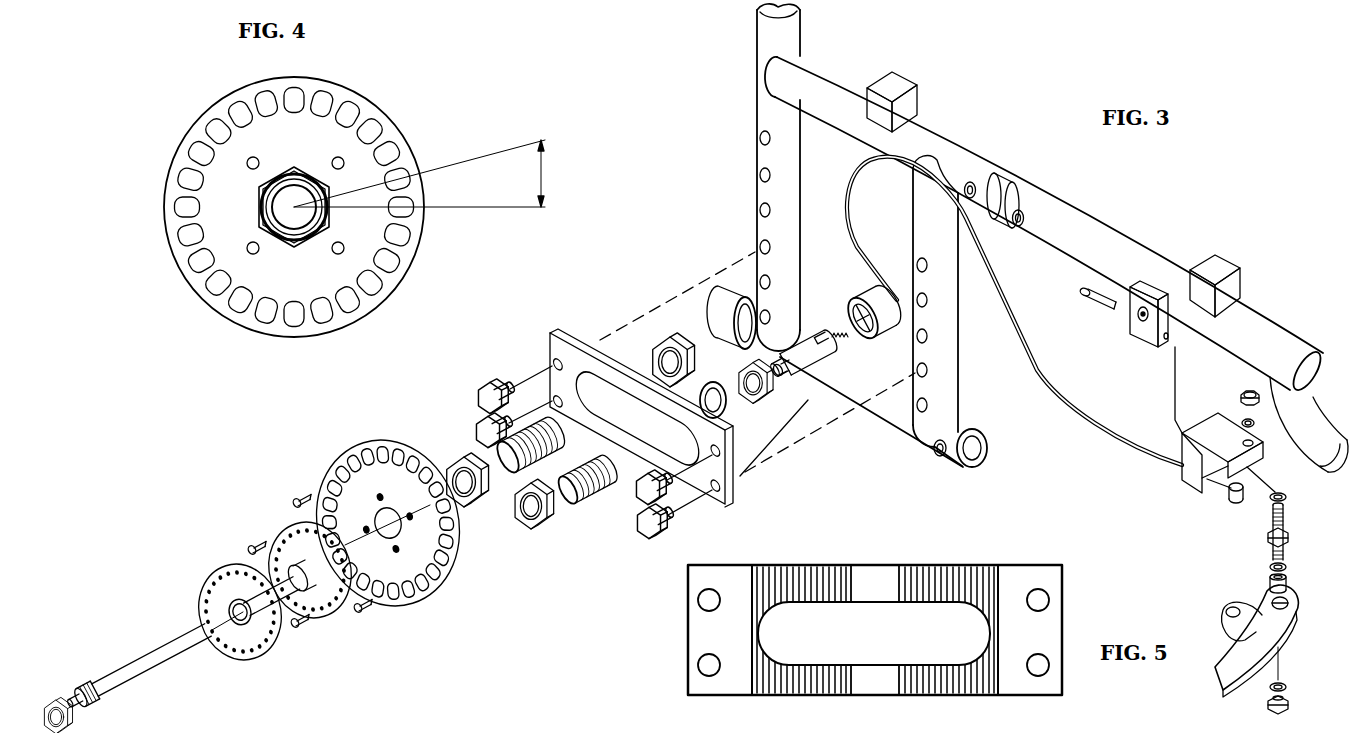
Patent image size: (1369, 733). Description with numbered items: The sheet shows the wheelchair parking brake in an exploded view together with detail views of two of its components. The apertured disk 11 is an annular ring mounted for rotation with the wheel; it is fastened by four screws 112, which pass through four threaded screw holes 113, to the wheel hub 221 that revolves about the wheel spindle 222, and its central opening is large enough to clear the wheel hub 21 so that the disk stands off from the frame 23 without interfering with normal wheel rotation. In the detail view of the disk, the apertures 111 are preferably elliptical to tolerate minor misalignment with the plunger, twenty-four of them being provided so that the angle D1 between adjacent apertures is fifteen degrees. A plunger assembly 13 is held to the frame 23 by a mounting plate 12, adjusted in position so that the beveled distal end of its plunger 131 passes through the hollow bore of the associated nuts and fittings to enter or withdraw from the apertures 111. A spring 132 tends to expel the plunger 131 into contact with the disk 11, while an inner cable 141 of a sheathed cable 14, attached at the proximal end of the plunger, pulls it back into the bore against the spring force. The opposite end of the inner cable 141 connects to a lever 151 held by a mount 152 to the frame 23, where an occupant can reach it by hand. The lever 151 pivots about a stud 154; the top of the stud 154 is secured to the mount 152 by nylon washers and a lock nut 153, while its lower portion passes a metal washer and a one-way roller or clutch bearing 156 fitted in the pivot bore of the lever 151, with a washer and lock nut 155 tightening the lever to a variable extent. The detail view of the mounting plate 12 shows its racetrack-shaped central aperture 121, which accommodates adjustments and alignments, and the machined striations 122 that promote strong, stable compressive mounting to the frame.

In FIG. 4, the apertured disk 11 is at (305, 128).
In FIG. 3, the apertured disk 11 is at (430, 604).
In FIG. 3, the mounting plate 12 is at (731, 508).
In FIG. 5, the mounting plate 12 is at (882, 578).
In FIG. 3, the plunger assembly 13 is at (806, 397).
In FIG. 3, the sheathed cable 14 is at (1029, 348).
In FIG. 4, the wheel hub 21 is at (313, 172).
In FIG. 3, the frame 23 is at (804, 30).
In FIG. 4, the apertures 111 is at (356, 306).
In FIG. 3, the screws 112 is at (333, 624).
In FIG. 4, the threaded screw holes 113 is at (253, 255).
In FIG. 5, the central aperture 121 is at (957, 651).
In FIG. 5, the grooved region 122 is at (957, 565).
In FIG. 3, the plunger 131 is at (805, 336).
In FIG. 3, the spring 132 is at (838, 322).
In FIG. 3, the inner cable 141 is at (838, 341).
In FIG. 3, the lever 151 is at (1238, 679).
In FIG. 3, the mount 152 is at (1139, 341).
In FIG. 3, the lock nut 153 is at (1243, 398).
In FIG. 3, the stud 154 is at (1289, 538).
In FIG. 3, the lock nut 155 is at (1289, 706).
In FIG. 3, the one-way roller bearing 156 is at (1289, 588).
In FIG. 3, the wheel hub 221 is at (248, 664).
In FIG. 3, the wheel spindle 222 is at (131, 664).
In FIG. 4, the angle D1 is at (432, 173).